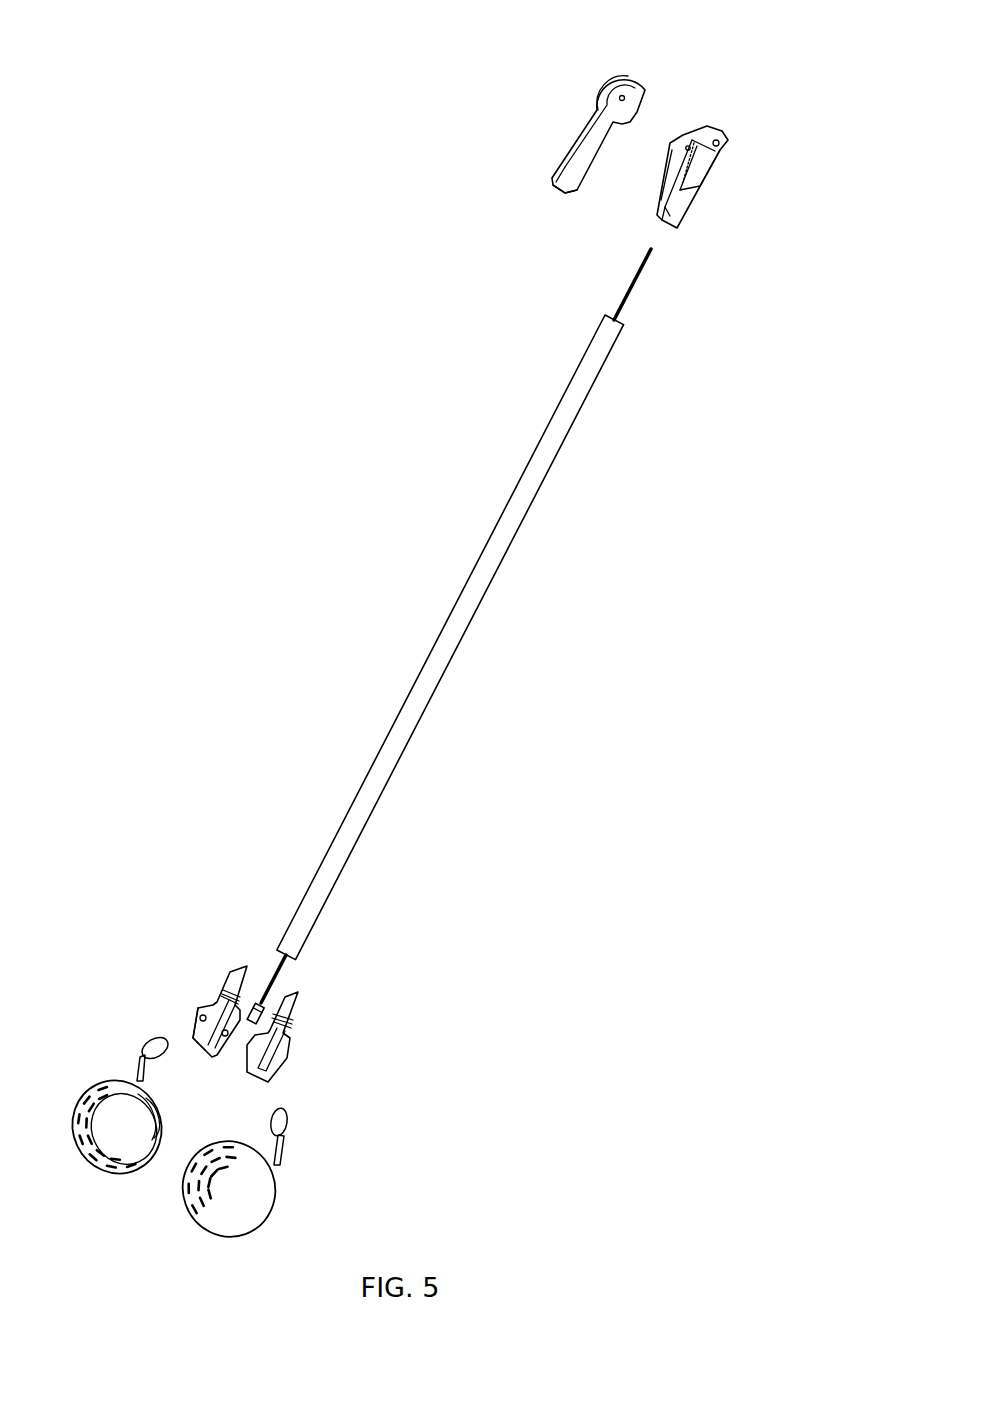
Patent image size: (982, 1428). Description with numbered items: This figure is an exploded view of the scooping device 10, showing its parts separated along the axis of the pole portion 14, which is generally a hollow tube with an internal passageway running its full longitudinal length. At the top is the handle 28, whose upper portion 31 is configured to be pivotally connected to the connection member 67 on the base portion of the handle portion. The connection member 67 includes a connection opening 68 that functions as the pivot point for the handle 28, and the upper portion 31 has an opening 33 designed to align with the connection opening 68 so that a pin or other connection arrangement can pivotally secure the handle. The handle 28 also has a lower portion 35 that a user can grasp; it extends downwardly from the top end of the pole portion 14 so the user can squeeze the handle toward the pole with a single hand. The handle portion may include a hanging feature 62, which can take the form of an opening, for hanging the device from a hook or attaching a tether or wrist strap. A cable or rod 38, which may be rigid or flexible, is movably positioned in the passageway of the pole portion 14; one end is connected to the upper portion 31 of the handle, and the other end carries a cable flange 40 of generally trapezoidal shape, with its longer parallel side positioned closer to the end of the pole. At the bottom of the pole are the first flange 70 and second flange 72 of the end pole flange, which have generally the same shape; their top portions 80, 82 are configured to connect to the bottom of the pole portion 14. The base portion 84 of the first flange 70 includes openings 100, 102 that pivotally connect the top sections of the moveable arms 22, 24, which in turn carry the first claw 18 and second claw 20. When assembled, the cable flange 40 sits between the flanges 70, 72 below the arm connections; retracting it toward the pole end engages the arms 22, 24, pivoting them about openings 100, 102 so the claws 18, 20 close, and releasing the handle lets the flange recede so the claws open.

The scooping device 10 is at (303, 545).
The pole portion 14 is at (508, 547).
The first claw 18 is at (106, 1088).
The second claw 20 is at (269, 1176).
The moveable arm 22 is at (143, 1045).
The moveable arm 24 is at (290, 1117).
The handle 28 is at (572, 107).
The upper portion 31 is at (603, 97).
The opening 33 is at (627, 92).
The lower portion 35 is at (558, 173).
The cable or rod 38 is at (633, 287).
The cable flange 40 is at (258, 1005).
The hanging feature 62 is at (708, 148).
The connection member 67 is at (672, 170).
The connection opening 68 is at (688, 143).
The first flange 70 is at (151, 1059).
The second flange 72 is at (322, 1027).
The top portion 80 is at (238, 968).
The top portion 82 is at (290, 1008).
The base portion 84 is at (196, 1028).
The opening 100 is at (200, 1016).
The opening 102 is at (223, 1035).